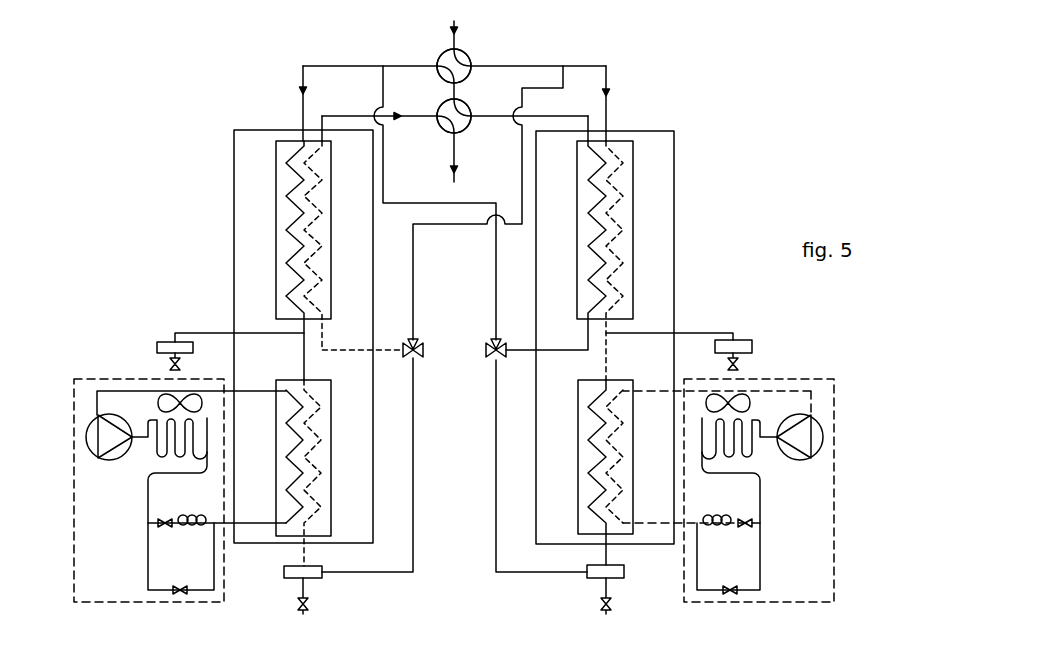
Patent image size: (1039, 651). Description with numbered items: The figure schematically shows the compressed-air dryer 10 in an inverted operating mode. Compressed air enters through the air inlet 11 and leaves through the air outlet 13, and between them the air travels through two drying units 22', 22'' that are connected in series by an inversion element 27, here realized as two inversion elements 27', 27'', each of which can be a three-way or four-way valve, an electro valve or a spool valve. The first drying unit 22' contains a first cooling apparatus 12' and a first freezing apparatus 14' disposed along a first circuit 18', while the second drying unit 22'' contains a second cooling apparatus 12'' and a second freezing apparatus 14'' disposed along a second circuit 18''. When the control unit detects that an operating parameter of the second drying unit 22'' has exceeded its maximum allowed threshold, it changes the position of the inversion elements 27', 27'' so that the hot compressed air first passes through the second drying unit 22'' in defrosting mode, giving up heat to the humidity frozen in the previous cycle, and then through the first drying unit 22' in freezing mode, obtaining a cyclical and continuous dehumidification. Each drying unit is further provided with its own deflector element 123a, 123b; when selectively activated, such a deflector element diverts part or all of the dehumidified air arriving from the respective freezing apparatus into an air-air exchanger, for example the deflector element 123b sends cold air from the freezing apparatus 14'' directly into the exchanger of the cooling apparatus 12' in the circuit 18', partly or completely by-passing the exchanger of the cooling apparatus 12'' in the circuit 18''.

The dryer 10 is at (692, 110).
The air inlet 11 is at (452, 22).
The first cooling apparatus 12' is at (293, 260).
The second cooling apparatus 12'' is at (620, 260).
The air outlet 13 is at (452, 147).
The first freezing apparatus 14' is at (369, 473).
The second freezing apparatus 14'' is at (542, 464).
The first circuit 18' is at (367, 490).
The second circuit 18'' is at (541, 490).
The first drying unit 22' is at (274, 304).
The second drying unit 22'' is at (640, 305).
The inversion element 27 is at (497, 78).
The first inversion element 27' is at (471, 48).
The second inversion element 27'' is at (478, 103).
The deflector element 123a is at (414, 340).
The deflector element 123b is at (496, 340).